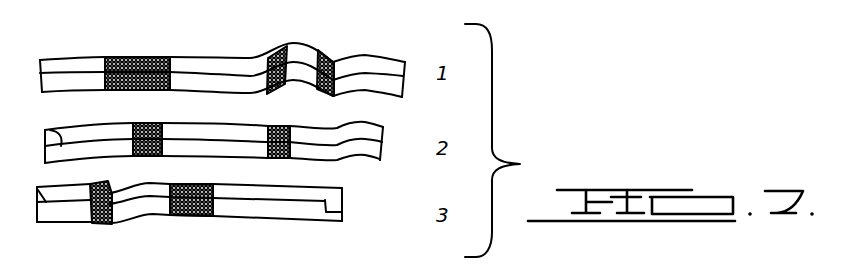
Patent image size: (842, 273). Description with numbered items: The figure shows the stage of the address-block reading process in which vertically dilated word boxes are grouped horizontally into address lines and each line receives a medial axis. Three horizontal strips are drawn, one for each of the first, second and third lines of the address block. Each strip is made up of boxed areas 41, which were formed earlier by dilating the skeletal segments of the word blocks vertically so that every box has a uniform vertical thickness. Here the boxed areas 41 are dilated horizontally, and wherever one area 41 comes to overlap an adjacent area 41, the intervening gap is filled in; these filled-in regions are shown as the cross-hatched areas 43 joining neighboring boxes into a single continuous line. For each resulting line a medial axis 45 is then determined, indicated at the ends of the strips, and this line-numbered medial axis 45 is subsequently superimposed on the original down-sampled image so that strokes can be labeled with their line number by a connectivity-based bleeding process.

The boxed area 41 is at (84, 56).
The filled-in overlap area 43 is at (138, 57).
The medial axis 45 is at (58, 70).